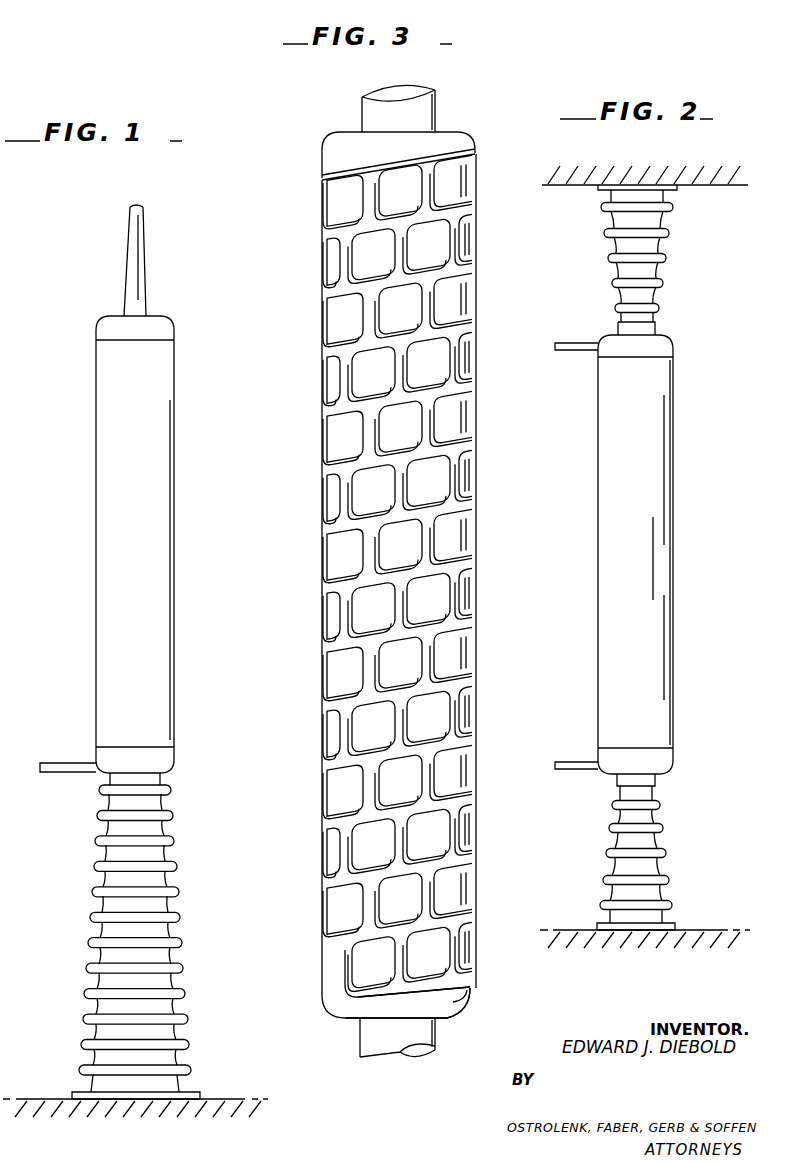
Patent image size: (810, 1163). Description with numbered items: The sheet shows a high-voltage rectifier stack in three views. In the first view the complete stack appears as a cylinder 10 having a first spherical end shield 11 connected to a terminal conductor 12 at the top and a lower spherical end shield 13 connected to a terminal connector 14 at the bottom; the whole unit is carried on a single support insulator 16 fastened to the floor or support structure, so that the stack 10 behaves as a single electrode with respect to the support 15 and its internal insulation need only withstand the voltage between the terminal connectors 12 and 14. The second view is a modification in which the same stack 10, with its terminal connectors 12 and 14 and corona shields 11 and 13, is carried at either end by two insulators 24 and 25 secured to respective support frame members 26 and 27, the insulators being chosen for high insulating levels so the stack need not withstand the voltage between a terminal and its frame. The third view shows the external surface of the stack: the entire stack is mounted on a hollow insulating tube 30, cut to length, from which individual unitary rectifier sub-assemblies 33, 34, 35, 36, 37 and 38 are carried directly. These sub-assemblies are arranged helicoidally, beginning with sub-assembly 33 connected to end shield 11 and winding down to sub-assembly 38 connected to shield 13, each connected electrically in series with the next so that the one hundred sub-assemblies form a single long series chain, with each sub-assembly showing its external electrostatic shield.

In FIG. 1, the cylinder 10 is at (172, 548).
In FIG. 2, the cylinder 10 is at (673, 590).
In FIG. 1, the first spherical end shield 11 is at (160, 329).
In FIG. 3, the first spherical end shield 11 is at (448, 139).
In FIG. 2, the first spherical end shield 11 is at (662, 348).
In FIG. 1, the terminal conductor 12 is at (134, 265).
In FIG. 2, the terminal conductor 12 is at (595, 341).
In FIG. 1, the lower spherical end shield 13 is at (172, 768).
In FIG. 3, the lower spherical end shield 13 is at (453, 1002).
In FIG. 2, the lower spherical end shield 13 is at (663, 766).
In FIG. 1, the terminal connector 14 is at (55, 761).
In FIG. 2, the terminal connector 14 is at (587, 760).
In FIG. 1, the support 15 is at (160, 805).
In FIG. 1, the single support insulator 16 is at (233, 1098).
In FIG. 2, the insulator 24 is at (657, 271).
In FIG. 2, the insulator 25 is at (655, 866).
In FIG. 2, the support frame member 26 is at (700, 188).
In FIG. 2, the support frame member 27 is at (692, 932).
In FIG. 3, the hollow insulating tube 30 is at (427, 108).
In FIG. 3, the sub-assembly 33 is at (450, 182).
In FIG. 3, the sub-assembly 34 is at (403, 178).
In FIG. 3, the sub-assembly 35 is at (340, 215).
In FIG. 3, the sub-assembly 36 is at (322, 202).
In FIG. 3, the sub-assembly 37 is at (465, 240).
In FIG. 3, the sub-assembly 38 is at (363, 966).